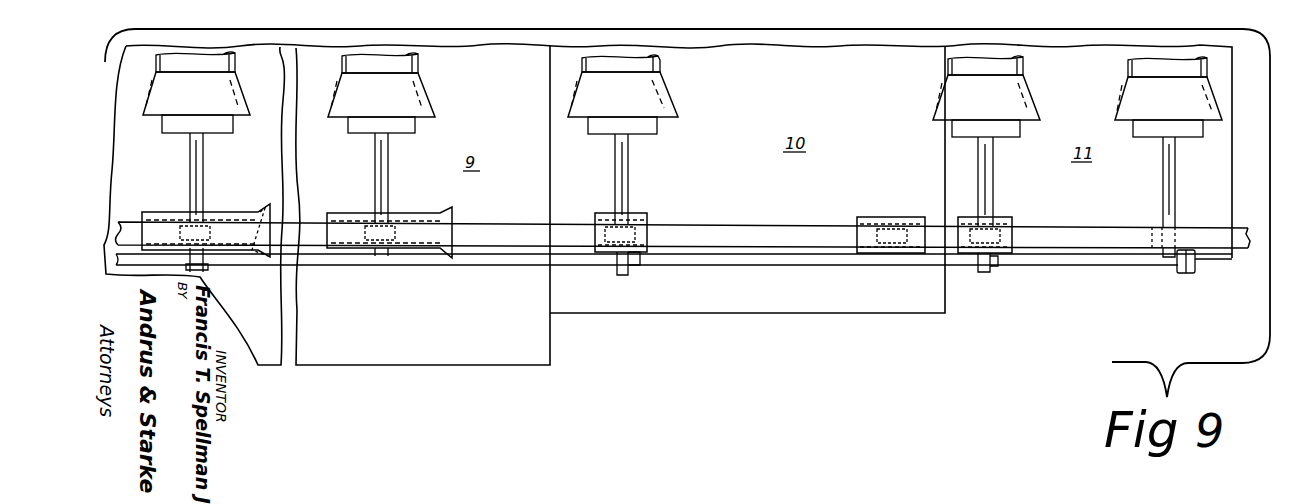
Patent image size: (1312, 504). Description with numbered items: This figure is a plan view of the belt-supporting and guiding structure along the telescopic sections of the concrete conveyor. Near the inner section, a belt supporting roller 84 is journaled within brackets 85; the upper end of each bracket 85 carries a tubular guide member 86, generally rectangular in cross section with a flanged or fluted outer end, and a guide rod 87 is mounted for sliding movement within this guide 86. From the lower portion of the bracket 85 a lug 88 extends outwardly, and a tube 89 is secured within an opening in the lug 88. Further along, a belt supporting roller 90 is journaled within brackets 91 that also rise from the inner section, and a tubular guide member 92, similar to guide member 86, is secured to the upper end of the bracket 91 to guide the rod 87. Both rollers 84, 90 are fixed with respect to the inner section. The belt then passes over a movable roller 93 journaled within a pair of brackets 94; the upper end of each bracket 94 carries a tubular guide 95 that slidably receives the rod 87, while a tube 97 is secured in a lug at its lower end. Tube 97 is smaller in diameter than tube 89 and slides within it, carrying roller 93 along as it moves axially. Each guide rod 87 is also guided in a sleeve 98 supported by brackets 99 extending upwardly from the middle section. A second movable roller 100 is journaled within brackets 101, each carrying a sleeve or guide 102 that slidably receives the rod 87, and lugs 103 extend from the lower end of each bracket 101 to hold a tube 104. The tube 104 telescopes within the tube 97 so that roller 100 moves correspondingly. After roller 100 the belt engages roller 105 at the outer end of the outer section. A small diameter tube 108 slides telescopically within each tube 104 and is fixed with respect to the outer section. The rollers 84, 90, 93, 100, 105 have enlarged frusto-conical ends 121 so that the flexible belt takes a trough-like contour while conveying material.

The belt supporting roller 84 is at (232, 58).
The brackets 85 is at (225, 230).
The tubular guide member 86 is at (165, 212).
The guide rod 87 is at (514, 226).
The lug 88 is at (207, 262).
The tube 89 is at (118, 250).
The belt supporting roller 90 is at (415, 64).
The brackets 91 is at (392, 232).
The tubular guide member 92 is at (346, 213).
The movable roller 93 is at (658, 66).
The brackets 94 is at (635, 232).
The tubular guide 95 is at (637, 213).
The tube 97 is at (565, 264).
The sleeve 98 is at (892, 217).
The brackets 99 is at (901, 256).
The second movable roller 100 is at (1022, 70).
The brackets 101 is at (1000, 232).
The sleeve or guide 102 is at (1000, 217).
The lugs 103 is at (985, 272).
The tube 104 is at (803, 264).
The roller 105 is at (1207, 70).
The small diameter tube 108 is at (1125, 264).
The enlarged frusto-conical ends 121 is at (150, 110).